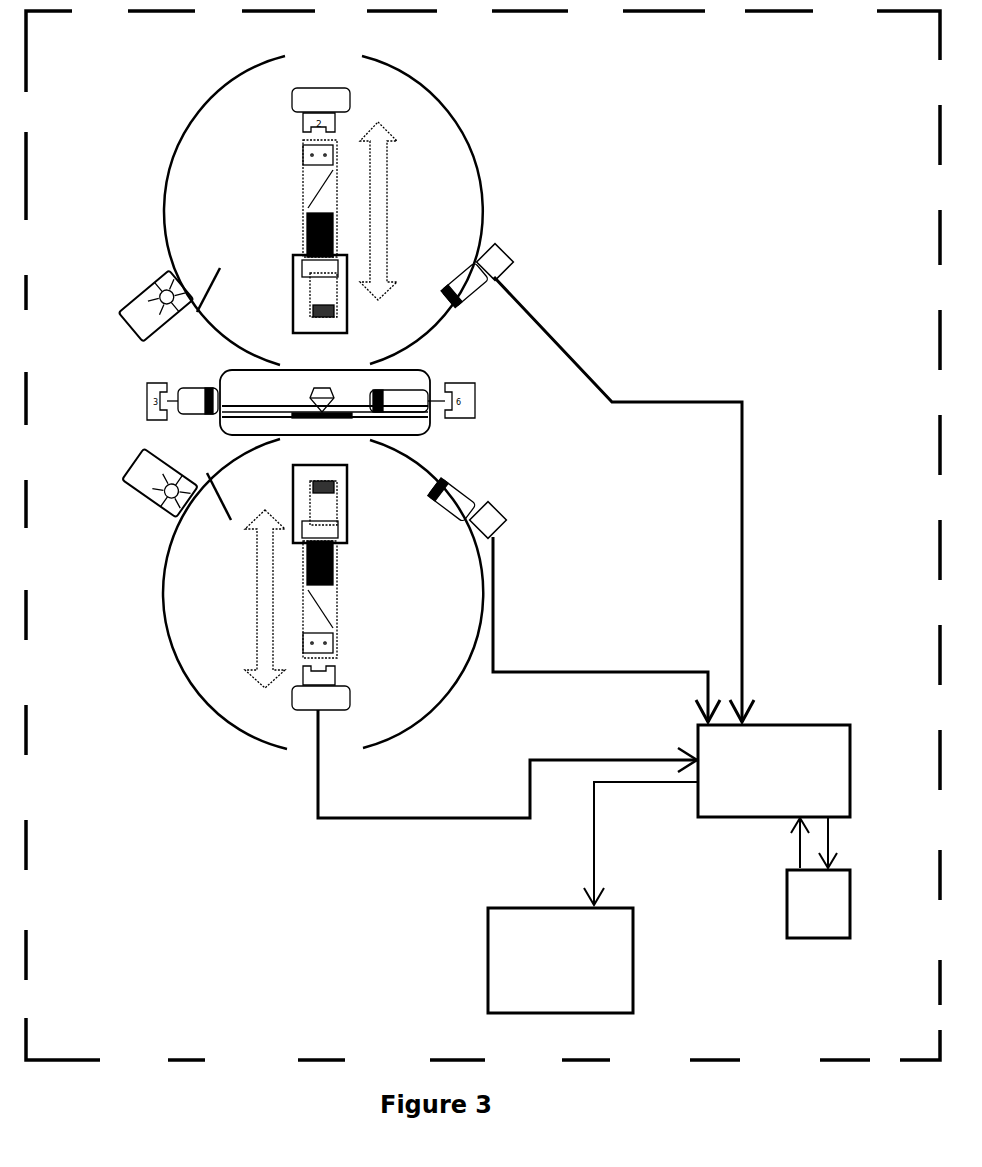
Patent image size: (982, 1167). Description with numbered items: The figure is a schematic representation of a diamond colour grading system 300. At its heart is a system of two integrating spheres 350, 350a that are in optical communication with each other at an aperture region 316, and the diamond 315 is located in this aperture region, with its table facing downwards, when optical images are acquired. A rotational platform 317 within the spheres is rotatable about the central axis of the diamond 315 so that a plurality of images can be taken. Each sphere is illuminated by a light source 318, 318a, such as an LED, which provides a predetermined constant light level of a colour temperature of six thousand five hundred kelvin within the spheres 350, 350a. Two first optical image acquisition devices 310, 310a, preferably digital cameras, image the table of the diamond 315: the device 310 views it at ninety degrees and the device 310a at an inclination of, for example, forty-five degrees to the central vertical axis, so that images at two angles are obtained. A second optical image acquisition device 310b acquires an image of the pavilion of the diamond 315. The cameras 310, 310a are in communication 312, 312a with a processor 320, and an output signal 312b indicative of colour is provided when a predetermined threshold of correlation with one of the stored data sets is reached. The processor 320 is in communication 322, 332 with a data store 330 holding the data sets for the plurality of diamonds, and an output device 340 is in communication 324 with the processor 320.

The system 300 is at (80, 1058).
The first optical image acquisition device 310 is at (305, 712).
The first optical image acquisition device 310a is at (502, 537).
The second optical image acquisition device 310b is at (512, 273).
The communication 312 is at (450, 822).
The communication 312a is at (582, 670).
The output signal 312b is at (746, 440).
The diamond 315 is at (345, 400).
The aperture region 316 is at (305, 383).
The rotational platform 317 is at (360, 418).
The light source 318 is at (130, 462).
The light source 318a is at (131, 330).
The processor 320 is at (805, 722).
The communication 322 is at (833, 832).
The communication 324 is at (597, 842).
The data store 330 is at (852, 905).
The communication 332 is at (798, 842).
The output device 340 is at (635, 977).
The integrating sphere 350 is at (448, 690).
The integrating sphere 350a is at (465, 140).